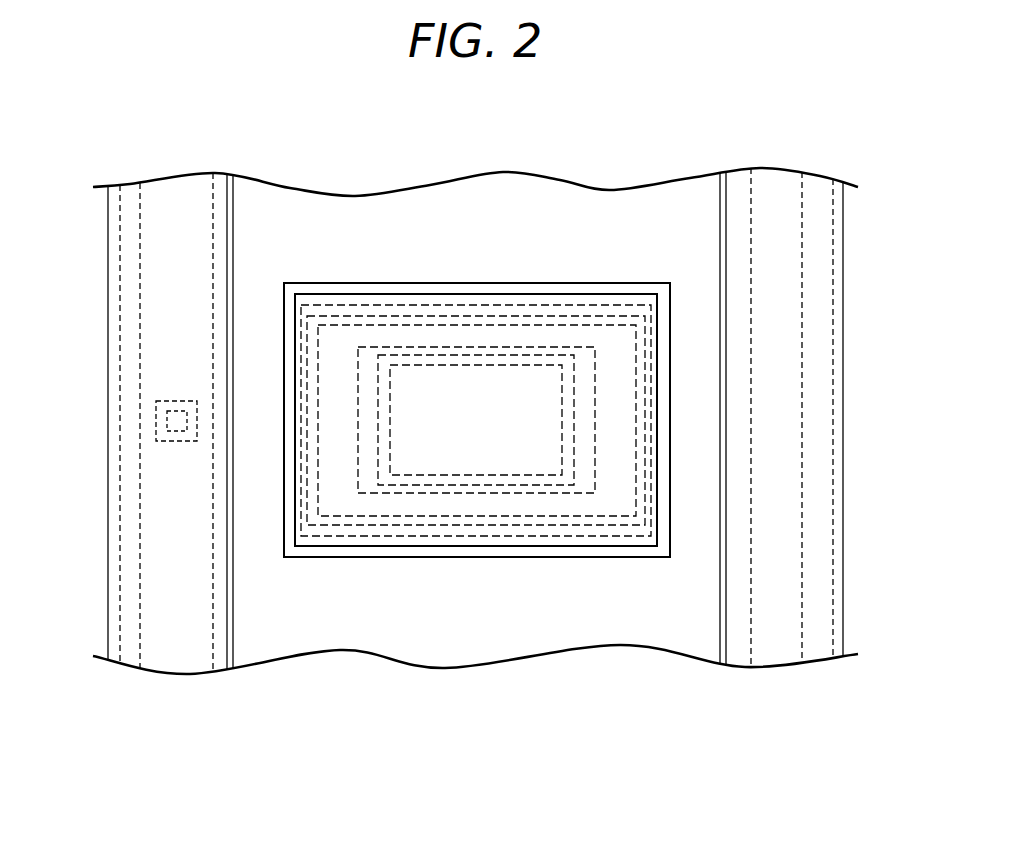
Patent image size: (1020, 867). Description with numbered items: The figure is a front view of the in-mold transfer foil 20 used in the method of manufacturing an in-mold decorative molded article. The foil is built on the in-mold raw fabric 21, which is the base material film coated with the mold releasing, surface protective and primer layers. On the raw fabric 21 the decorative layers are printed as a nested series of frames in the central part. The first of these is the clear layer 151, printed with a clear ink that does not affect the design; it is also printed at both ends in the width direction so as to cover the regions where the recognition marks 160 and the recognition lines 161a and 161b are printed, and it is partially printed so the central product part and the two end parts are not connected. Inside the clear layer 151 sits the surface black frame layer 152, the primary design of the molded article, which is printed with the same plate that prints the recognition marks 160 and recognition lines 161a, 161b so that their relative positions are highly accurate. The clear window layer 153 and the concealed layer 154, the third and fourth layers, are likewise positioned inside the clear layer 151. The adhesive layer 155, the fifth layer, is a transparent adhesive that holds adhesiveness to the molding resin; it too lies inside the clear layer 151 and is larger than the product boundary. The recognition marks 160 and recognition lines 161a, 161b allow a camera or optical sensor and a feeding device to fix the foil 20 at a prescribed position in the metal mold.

The in-mold transfer foil 20 is at (105, 605).
The in-mold raw fabric 21 is at (476, 647).
The clear layer 151 is at (302, 294).
The surface black frame layer 152 is at (413, 317).
The clear window layer 153 is at (510, 380).
The concealed layer 154 is at (469, 325).
The adhesive layer 155 is at (356, 304).
The recognition mark 160 is at (160, 419).
The recognition line 161a is at (177, 195).
The recognition line 161b is at (777, 195).